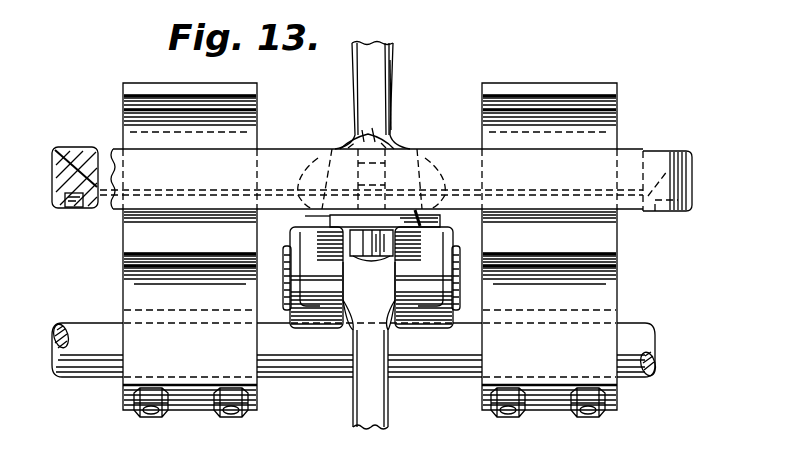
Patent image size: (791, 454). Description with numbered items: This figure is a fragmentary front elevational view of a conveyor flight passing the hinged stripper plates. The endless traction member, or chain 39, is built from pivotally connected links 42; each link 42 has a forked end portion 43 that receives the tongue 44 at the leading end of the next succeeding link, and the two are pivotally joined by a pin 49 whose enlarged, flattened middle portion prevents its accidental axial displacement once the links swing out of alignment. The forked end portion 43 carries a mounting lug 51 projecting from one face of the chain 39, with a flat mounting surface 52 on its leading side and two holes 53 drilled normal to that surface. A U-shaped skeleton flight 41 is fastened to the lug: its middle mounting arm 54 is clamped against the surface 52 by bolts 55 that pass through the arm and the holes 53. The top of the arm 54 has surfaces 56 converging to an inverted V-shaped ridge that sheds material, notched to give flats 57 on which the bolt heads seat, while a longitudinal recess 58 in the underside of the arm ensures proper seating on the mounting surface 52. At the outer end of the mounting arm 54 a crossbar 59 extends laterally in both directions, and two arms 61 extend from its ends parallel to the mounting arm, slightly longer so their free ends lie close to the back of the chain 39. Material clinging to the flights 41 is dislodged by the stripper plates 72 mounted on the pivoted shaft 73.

The endless traction member or chain 39 is at (403, 75).
The flight 41 is at (437, 147).
The link 42 is at (365, 76).
The forked end portion 43 is at (300, 240).
The tongue 44 is at (353, 290).
The pin 49 is at (287, 272).
The mounting lug 51 is at (442, 222).
The flat mounting surface 52 is at (420, 212).
The holes 53 is at (398, 257).
The mounting arm 54 is at (361, 142).
The bolts 55 is at (333, 146).
The converging surfaces 56 is at (325, 178).
The flats 57 is at (409, 148).
The recess 58 is at (305, 221).
The crossbar 59 is at (556, 149).
The arms 61 is at (60, 172).
The stripper plates 72 is at (124, 118).
The shaft 73 is at (441, 373).